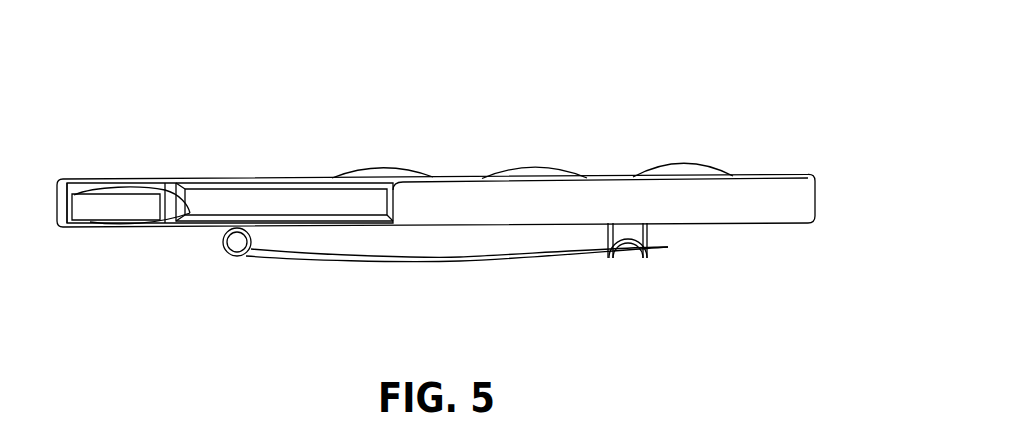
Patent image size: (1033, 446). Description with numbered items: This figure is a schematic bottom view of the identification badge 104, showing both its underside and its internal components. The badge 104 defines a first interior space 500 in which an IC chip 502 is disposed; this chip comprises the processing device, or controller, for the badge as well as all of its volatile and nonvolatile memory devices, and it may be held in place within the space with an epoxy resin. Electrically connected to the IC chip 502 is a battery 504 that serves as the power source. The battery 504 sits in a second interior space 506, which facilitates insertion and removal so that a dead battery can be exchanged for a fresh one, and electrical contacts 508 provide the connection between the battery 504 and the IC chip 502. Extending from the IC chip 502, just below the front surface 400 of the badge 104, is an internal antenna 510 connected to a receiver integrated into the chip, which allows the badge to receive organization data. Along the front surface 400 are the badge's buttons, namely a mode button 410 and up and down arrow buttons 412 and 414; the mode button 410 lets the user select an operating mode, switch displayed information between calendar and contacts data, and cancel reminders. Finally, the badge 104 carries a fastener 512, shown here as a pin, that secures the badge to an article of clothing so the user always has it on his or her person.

The identification badge 104 is at (800, 100).
The front surface 400 is at (221, 178).
The mode button 410 is at (542, 170).
The up arrow button 412 is at (392, 170).
The down arrow button 414 is at (690, 163).
The first interior space 500 is at (199, 217).
The IC chip 502 is at (240, 197).
The battery 504 is at (82, 213).
The second interior space 506 is at (78, 188).
The electrical contacts 508 is at (141, 223).
The internal antenna 510 is at (527, 183).
The fastener 512 is at (505, 286).